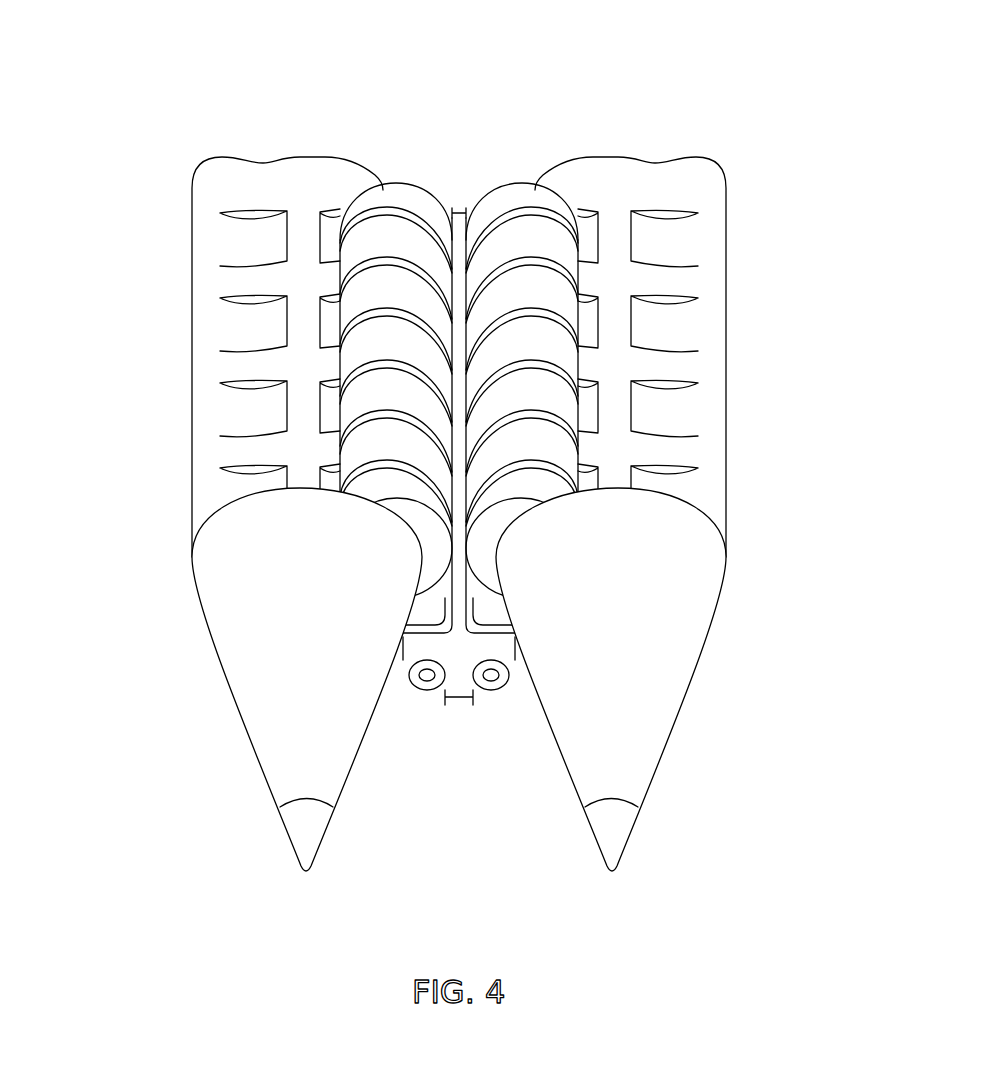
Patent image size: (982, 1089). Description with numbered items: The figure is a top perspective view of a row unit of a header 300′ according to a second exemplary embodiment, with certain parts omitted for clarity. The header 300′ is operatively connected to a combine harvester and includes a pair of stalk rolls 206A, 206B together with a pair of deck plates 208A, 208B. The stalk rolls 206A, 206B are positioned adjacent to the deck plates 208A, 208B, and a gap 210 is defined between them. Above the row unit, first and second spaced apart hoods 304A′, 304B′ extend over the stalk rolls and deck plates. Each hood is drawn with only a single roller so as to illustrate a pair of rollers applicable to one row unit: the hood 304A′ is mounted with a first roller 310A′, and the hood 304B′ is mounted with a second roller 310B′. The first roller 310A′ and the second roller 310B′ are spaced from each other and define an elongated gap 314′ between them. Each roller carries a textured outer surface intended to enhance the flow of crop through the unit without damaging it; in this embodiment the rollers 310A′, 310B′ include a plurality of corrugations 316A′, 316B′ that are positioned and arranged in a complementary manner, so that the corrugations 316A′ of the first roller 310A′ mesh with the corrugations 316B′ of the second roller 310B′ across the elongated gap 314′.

The header 300′ is at (461, 455).
The first hood 304A′ is at (228, 458).
The second hood 304B′ is at (697, 443).
The first roller 310A′ is at (360, 298).
The second roller 310B′ is at (557, 298).
The elongated gap 314′ is at (459, 208).
The corrugations of the first roller 316A′ is at (384, 207).
The corrugations of the second roller 316B′ is at (540, 207).
The first stalk roll 206A is at (433, 690).
The second stalk roll 206B is at (492, 690).
The first deck plate 208A is at (420, 638).
The second deck plate 208B is at (498, 638).
The gap 210 is at (462, 698).